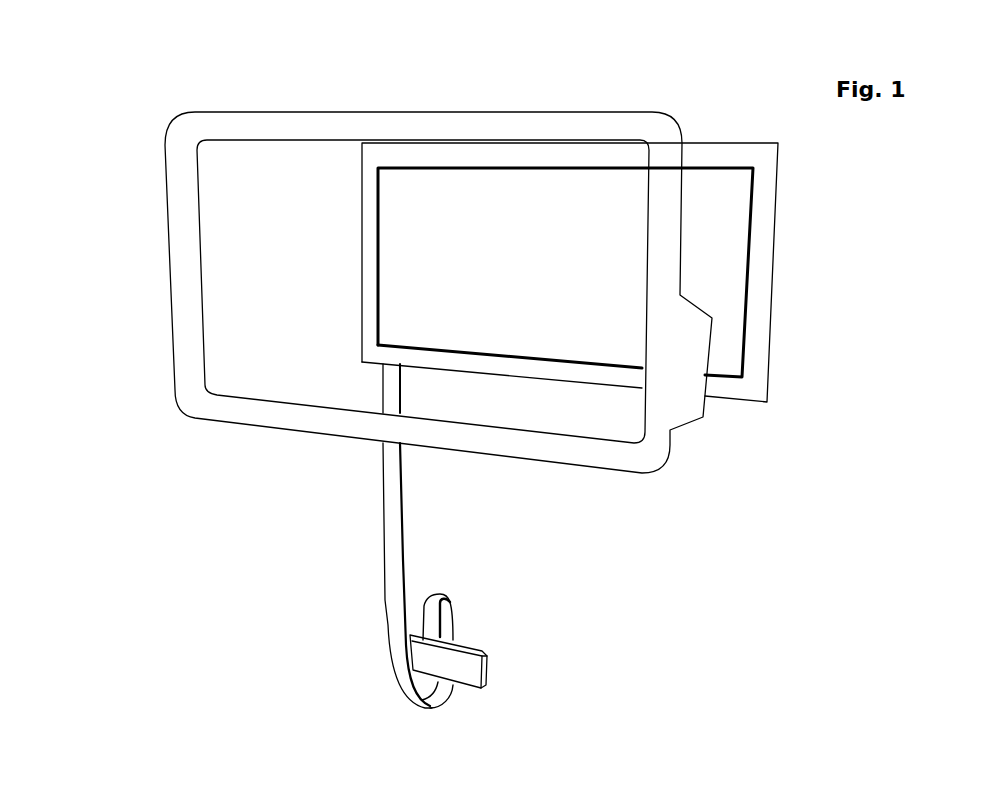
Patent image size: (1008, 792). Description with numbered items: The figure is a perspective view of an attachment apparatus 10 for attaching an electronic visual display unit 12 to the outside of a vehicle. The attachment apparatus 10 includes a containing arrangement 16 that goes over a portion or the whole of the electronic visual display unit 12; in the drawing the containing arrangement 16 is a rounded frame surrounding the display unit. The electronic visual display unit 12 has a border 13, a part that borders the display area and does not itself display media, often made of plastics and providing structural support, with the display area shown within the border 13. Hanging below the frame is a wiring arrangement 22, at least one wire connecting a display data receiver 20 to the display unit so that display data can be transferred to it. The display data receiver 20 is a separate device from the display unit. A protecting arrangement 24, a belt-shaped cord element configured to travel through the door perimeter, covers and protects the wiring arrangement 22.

The attachment apparatus 10 is at (163, 167).
The electronic visual display unit 12 is at (775, 245).
The border 13 is at (742, 157).
The containing arrangement 16 is at (655, 268).
The display data receiver 20 is at (494, 668).
The wiring arrangement 22 is at (373, 596).
The protecting arrangement 24 is at (405, 565).